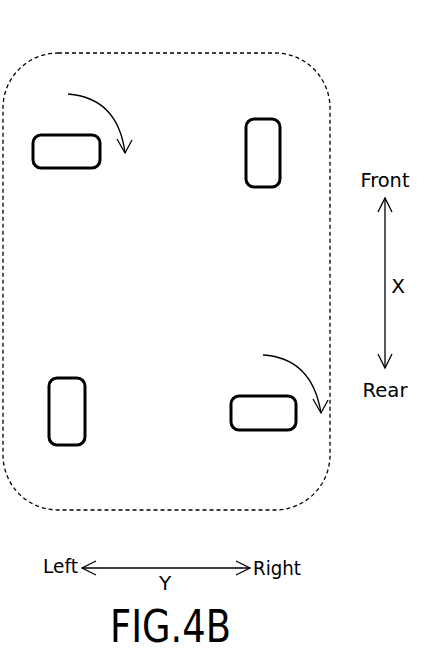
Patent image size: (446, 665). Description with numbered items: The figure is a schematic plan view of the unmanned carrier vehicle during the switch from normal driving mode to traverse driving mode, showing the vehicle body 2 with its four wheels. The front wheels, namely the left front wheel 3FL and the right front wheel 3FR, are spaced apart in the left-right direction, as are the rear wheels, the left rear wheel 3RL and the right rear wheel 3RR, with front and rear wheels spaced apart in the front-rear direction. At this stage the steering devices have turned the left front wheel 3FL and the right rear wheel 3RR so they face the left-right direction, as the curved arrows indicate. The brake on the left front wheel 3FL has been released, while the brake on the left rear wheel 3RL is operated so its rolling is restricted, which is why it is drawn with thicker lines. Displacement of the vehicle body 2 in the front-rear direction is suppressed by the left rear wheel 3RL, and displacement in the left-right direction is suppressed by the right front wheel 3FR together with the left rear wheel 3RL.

The vehicle body 2 is at (163, 53).
The left front wheel 3FL is at (68, 168).
The right front wheel 3FR is at (263, 119).
The left rear wheel 3RL is at (66, 378).
The right rear wheel 3RR is at (263, 430).